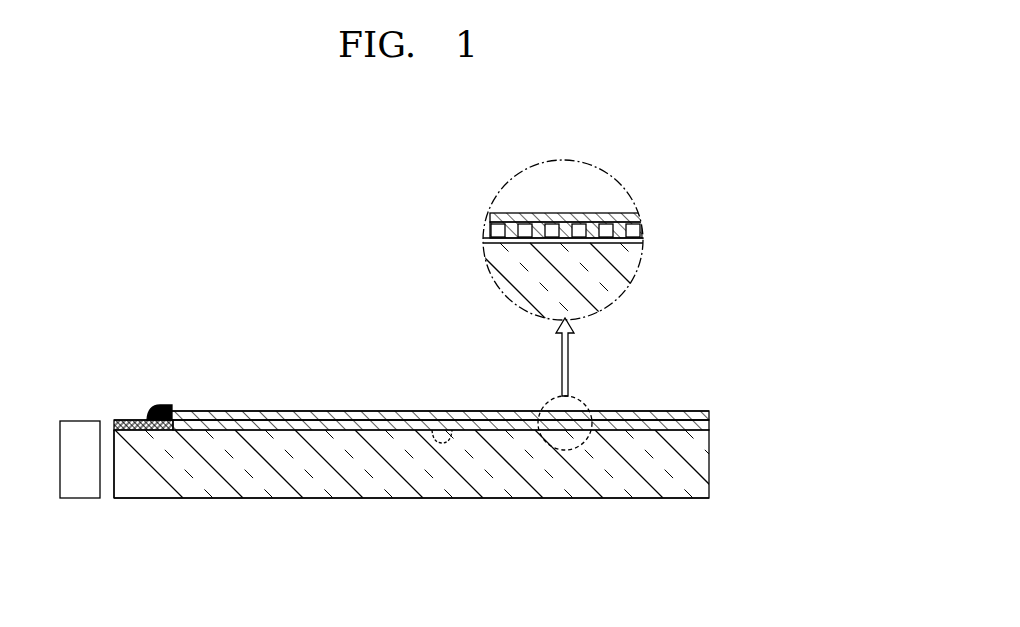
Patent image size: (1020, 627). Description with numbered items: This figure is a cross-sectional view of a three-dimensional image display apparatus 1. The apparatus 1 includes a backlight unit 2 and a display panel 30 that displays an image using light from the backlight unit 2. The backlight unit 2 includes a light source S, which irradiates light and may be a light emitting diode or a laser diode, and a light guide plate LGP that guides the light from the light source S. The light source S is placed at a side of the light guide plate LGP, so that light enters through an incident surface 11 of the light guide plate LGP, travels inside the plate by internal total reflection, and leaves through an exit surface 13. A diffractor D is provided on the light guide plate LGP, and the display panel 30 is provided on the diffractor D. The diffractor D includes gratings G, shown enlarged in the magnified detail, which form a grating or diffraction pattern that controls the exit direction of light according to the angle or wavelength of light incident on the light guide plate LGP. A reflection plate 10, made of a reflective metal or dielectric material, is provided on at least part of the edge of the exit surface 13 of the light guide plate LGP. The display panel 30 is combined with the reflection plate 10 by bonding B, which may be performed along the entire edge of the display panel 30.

The three-dimensional image display apparatus 1 is at (260, 332).
The backlight unit 2 is at (718, 430).
The reflection plate 10 is at (132, 420).
The incident surface 11 is at (120, 475).
The exit surface 13 is at (450, 430).
The display panel 30 is at (636, 412).
The light source S is at (78, 420).
The bonding B is at (162, 404).
The diffractor D is at (338, 412).
The gratings G is at (566, 214).
The light guide plate LGP is at (412, 499).